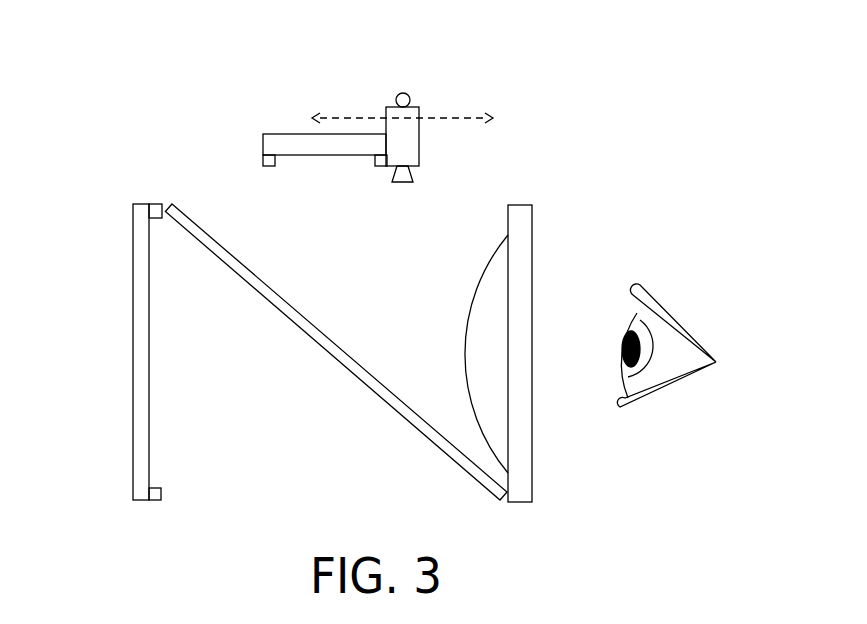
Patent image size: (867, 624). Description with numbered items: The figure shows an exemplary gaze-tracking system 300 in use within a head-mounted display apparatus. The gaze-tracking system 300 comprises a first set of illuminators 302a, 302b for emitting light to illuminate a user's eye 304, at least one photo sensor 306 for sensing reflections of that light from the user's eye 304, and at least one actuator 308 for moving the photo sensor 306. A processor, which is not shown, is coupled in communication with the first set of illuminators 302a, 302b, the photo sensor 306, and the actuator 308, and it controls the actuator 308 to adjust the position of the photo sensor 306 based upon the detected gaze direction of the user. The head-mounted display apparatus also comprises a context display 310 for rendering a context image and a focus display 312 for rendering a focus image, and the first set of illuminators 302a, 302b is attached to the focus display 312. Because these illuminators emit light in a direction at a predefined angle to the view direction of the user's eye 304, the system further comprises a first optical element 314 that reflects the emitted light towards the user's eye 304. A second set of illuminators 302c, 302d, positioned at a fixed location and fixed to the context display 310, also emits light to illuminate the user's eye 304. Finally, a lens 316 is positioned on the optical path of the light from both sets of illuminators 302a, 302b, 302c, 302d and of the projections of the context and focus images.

The gaze-tracking system 300 is at (678, 104).
The first set of illuminators 302a is at (270, 205).
The first set of illuminators 302b is at (385, 205).
The second set of illuminators 302c is at (150, 170).
The second set of illuminators 302d is at (210, 504).
The user's eye 304 is at (666, 332).
The photo sensor 306 is at (413, 144).
The actuator 308 is at (417, 60).
The context display 310 is at (89, 352).
The focus display 312 is at (324, 185).
The first optical element 314 is at (336, 352).
The lens 316 is at (547, 353).